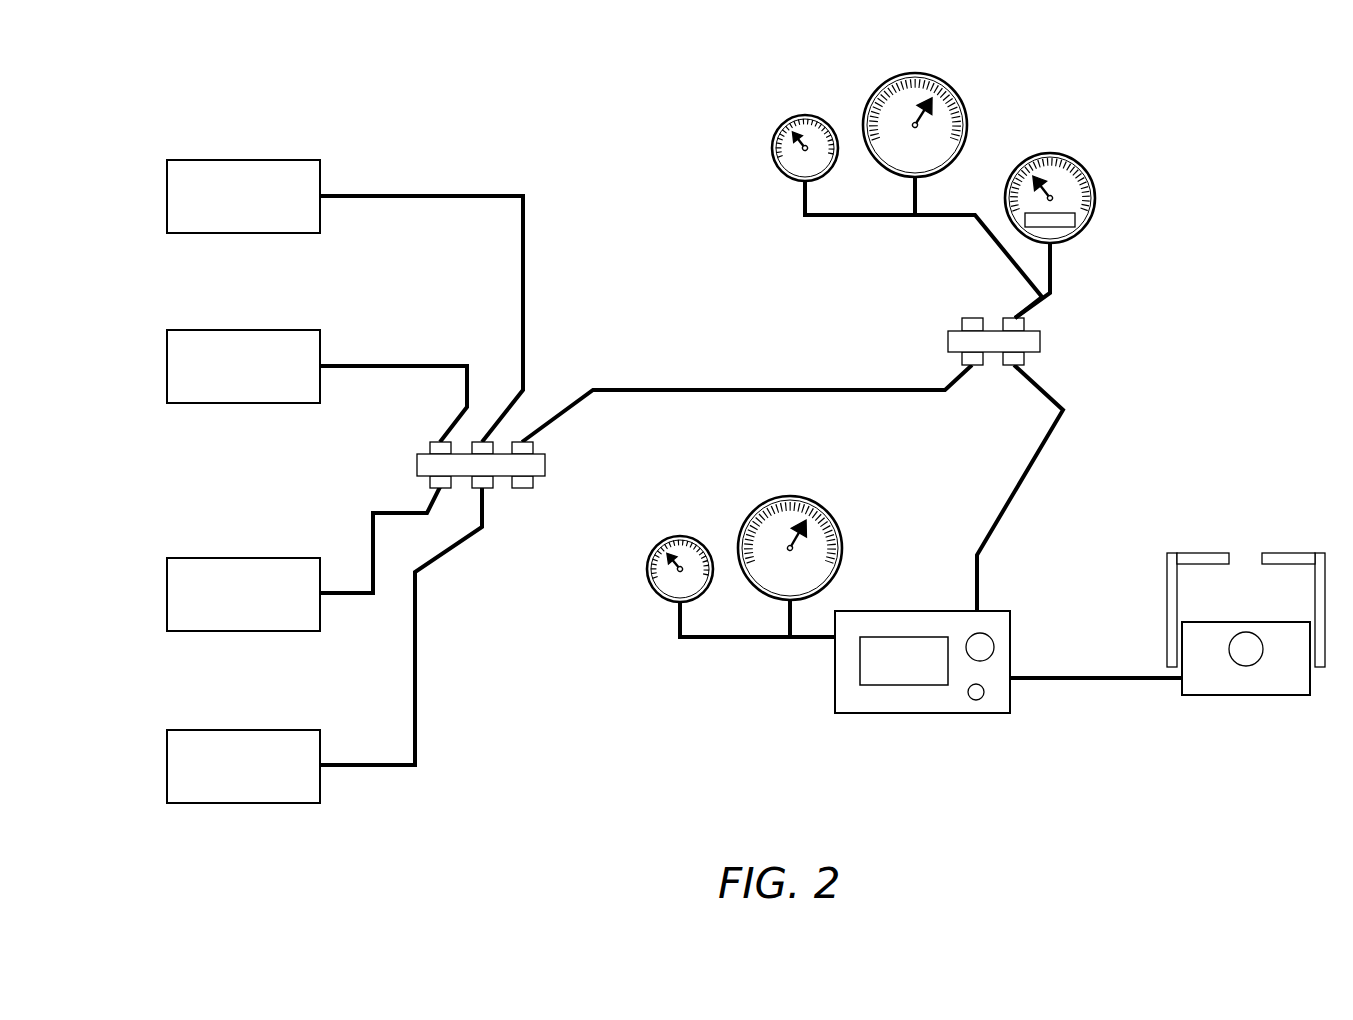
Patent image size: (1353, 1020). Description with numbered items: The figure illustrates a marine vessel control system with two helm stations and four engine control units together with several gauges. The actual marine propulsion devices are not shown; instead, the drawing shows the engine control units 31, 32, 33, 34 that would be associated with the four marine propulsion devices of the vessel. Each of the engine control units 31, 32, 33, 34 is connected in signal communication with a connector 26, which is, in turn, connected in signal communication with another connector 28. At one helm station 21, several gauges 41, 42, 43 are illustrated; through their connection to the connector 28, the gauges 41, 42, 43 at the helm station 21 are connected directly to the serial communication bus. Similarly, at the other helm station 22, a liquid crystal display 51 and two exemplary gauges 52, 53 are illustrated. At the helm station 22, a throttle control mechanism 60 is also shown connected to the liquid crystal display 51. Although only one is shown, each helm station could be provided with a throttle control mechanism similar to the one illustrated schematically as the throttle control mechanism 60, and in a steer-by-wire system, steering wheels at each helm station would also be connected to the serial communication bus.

The helm station 21 is at (1113, 89).
The helm station 22 is at (807, 627).
The connector 26 is at (545, 466).
The connector 28 is at (1040, 341).
The engine control unit 31 is at (260, 233).
The engine control unit 32 is at (265, 403).
The engine control unit 33 is at (263, 632).
The engine control unit 34 is at (270, 803).
The gauge 41 is at (1075, 160).
The gauge 42 is at (950, 90).
The gauge 43 is at (795, 118).
The liquid crystal display 51 is at (920, 705).
The gauge 52 is at (828, 508).
The gauge 53 is at (668, 540).
The throttle control mechanism 60 is at (1253, 686).